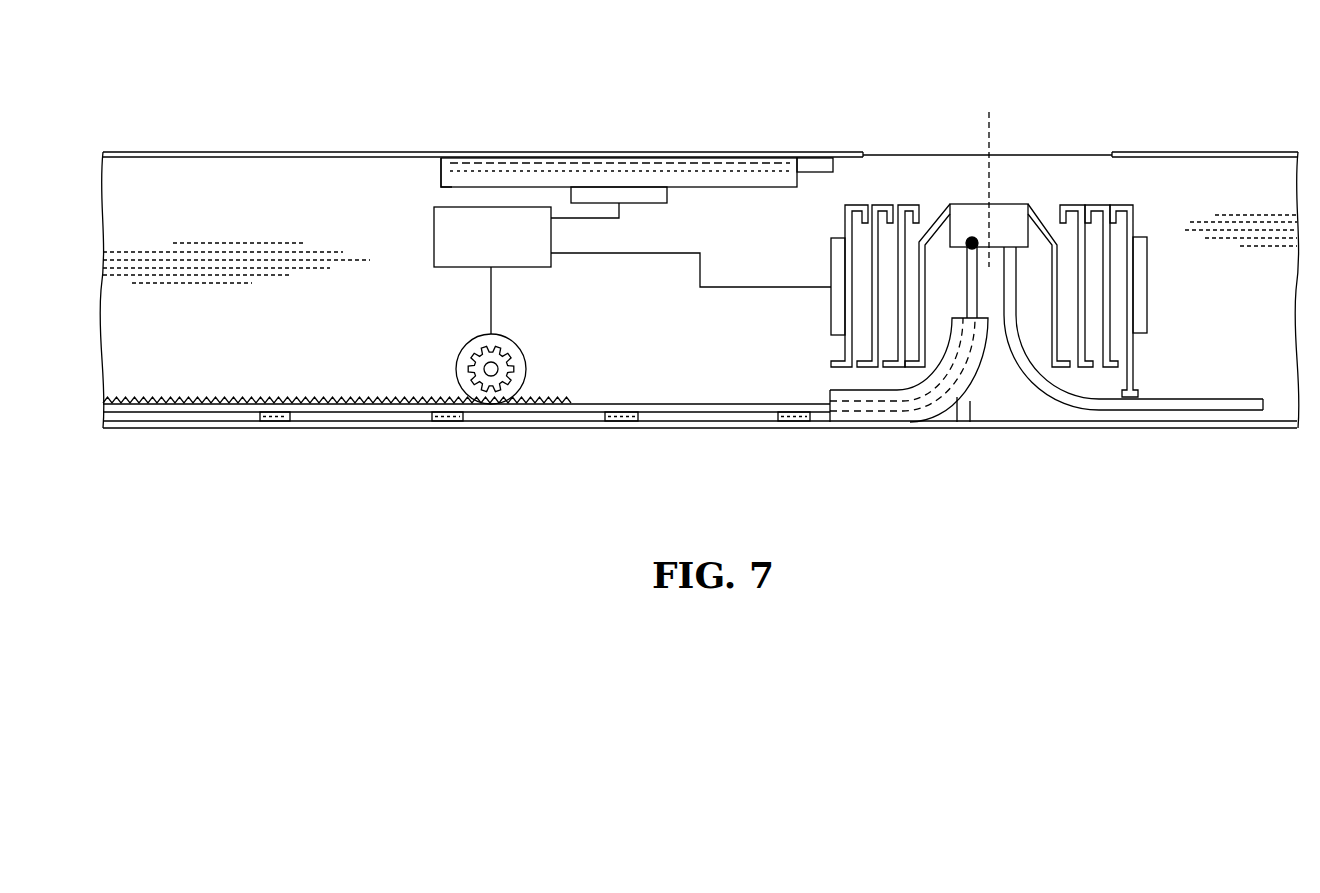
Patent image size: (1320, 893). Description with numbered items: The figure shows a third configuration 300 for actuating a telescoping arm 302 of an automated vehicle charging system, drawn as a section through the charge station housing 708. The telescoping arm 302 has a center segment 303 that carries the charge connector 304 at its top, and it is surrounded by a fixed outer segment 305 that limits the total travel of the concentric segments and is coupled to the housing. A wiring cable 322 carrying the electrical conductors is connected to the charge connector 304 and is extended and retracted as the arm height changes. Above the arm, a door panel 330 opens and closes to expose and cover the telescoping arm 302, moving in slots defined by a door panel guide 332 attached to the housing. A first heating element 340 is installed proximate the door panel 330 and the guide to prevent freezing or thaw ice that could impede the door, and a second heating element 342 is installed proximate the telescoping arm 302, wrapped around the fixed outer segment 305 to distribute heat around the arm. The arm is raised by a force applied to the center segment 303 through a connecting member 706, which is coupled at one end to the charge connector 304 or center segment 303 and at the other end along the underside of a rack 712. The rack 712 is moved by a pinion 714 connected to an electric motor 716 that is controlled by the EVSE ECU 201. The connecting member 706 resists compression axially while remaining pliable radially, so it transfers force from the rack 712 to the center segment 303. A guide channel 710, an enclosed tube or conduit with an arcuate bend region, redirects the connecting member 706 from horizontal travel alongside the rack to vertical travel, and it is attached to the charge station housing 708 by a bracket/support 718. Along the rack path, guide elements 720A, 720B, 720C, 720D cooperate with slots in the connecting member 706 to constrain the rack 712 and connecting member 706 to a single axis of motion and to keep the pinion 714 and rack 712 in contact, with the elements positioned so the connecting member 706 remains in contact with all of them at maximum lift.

The configuration for actuating a telescoping arm 300 is at (1185, 88).
The telescoping arm 302 is at (1005, 100).
The center segment 303 is at (1048, 227).
The charge connector 304 is at (977, 206).
The fixed outer segment 305 is at (1120, 203).
The wiring cable 322 is at (1018, 288).
The door panel 330 is at (713, 154).
The door panel guide 332 is at (441, 170).
The first heating element 340 is at (633, 192).
The second heating element 342 is at (831, 262).
The EVSE ECU 201 is at (434, 240).
The connecting member 706 is at (965, 285).
The charge station housing 708 is at (318, 152).
The guide channel 710 is at (848, 390).
The rack 712 is at (548, 398).
The pinion 714 is at (472, 362).
The electric motor 716 is at (476, 334).
The bracket/support 718 is at (975, 402).
The guide element 720A is at (273, 421).
The guide element 720B is at (448, 421).
The guide element 720C is at (623, 417).
The guide element 720D is at (797, 417).